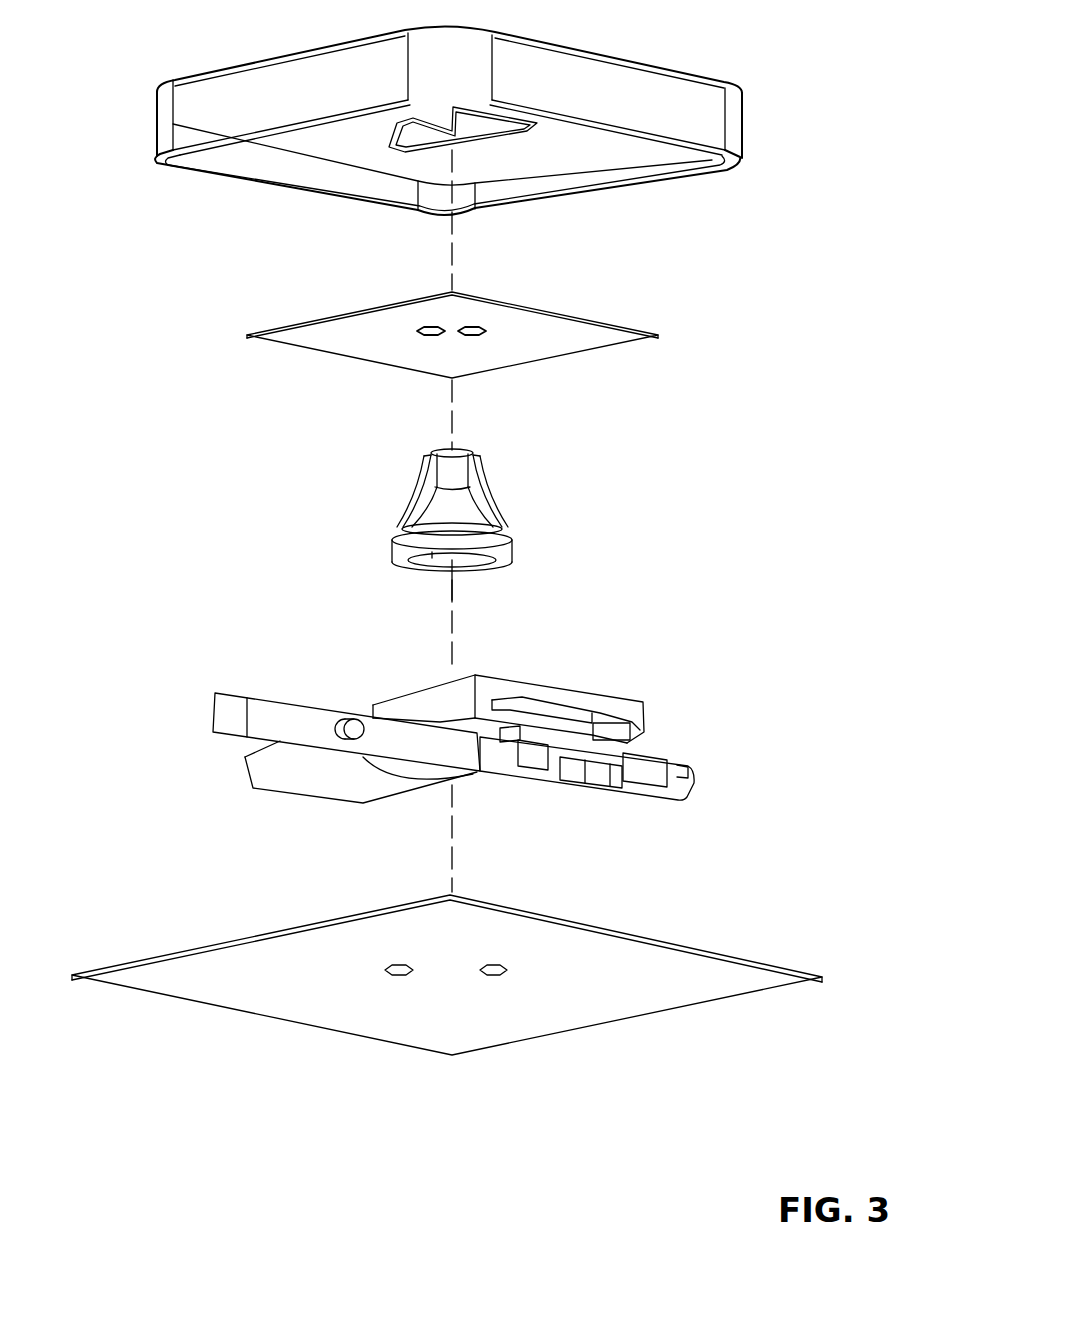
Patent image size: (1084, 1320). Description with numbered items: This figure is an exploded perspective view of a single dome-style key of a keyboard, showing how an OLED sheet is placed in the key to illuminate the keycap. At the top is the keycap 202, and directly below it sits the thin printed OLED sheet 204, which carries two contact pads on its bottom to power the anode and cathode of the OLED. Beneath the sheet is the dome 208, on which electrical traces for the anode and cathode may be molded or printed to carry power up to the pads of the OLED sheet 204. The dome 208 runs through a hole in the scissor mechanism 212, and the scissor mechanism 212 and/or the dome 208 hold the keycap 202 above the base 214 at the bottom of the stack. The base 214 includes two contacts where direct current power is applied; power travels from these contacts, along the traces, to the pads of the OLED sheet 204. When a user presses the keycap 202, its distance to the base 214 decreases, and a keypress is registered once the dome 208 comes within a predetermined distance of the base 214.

The keycap 202 is at (743, 121).
The OLED sheet 204 is at (658, 333).
The dome 208 is at (464, 501).
The scissor mechanism 212 is at (643, 713).
The base 214 is at (735, 952).